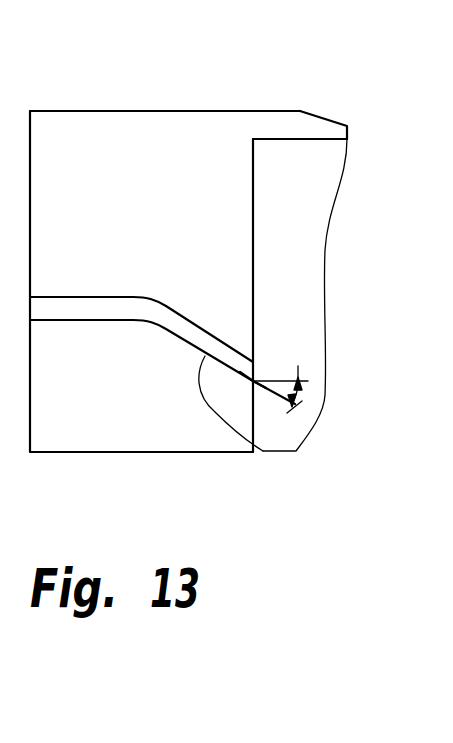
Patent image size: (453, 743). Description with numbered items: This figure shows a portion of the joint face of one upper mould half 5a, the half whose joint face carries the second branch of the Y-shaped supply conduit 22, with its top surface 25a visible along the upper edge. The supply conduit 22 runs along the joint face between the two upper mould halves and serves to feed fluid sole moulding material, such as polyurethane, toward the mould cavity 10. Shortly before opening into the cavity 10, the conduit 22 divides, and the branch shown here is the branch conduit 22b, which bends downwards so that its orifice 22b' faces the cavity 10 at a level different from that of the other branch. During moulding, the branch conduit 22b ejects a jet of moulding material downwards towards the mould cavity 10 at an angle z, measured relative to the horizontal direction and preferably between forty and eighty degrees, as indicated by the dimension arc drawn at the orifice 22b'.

The upper mould half 5a is at (135, 112).
The top surface of slider 25a is at (205, 134).
The mould cavity 10 is at (307, 188).
The supply conduit 22 is at (95, 321).
The branch conduit 22b is at (290, 442).
The orifice of branch conduit 22b' is at (330, 342).
The angle z is at (306, 393).